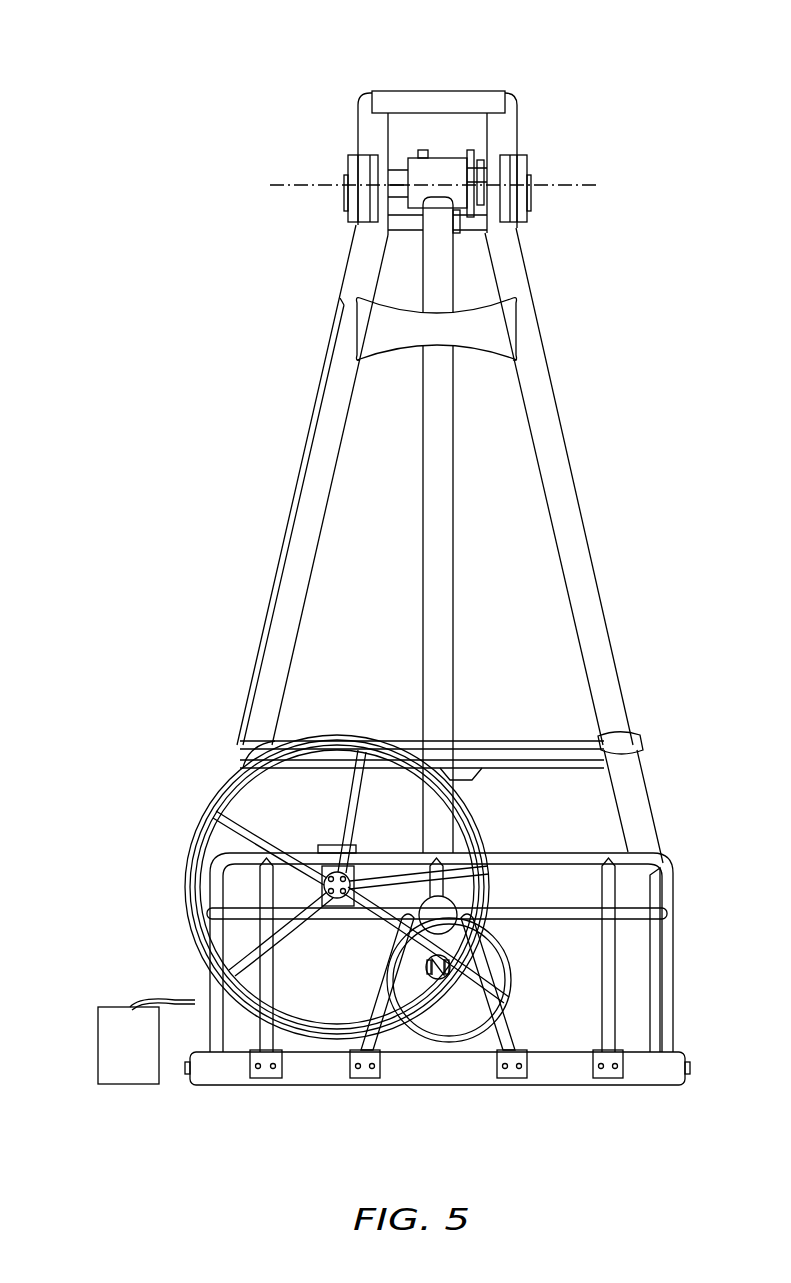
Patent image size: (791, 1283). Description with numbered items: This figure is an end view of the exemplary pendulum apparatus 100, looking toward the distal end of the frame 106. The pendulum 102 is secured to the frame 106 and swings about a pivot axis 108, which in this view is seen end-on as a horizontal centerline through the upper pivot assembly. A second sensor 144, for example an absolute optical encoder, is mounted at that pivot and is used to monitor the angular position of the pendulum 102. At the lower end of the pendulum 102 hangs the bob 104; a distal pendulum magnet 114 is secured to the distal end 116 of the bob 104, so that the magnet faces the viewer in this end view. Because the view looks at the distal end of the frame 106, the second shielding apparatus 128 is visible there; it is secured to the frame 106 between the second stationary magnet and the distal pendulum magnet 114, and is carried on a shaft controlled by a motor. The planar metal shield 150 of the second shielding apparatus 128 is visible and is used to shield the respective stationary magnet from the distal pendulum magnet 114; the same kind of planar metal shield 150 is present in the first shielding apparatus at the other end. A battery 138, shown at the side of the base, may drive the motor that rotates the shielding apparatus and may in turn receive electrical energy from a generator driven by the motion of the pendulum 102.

The pendulum apparatus 100 is at (590, 66).
The pivot axis 108 is at (590, 185).
The second sensor 144 is at (350, 182).
The pendulum 102 is at (453, 527).
The frame 106 is at (652, 824).
The second shielding apparatus 128 is at (200, 817).
The bob 104 is at (512, 966).
The planar metal shield 150 is at (337, 995).
The battery 138 is at (98, 1040).
The distal pendulum magnet 114 is at (403, 1013).
The distal end 116 is at (460, 1013).